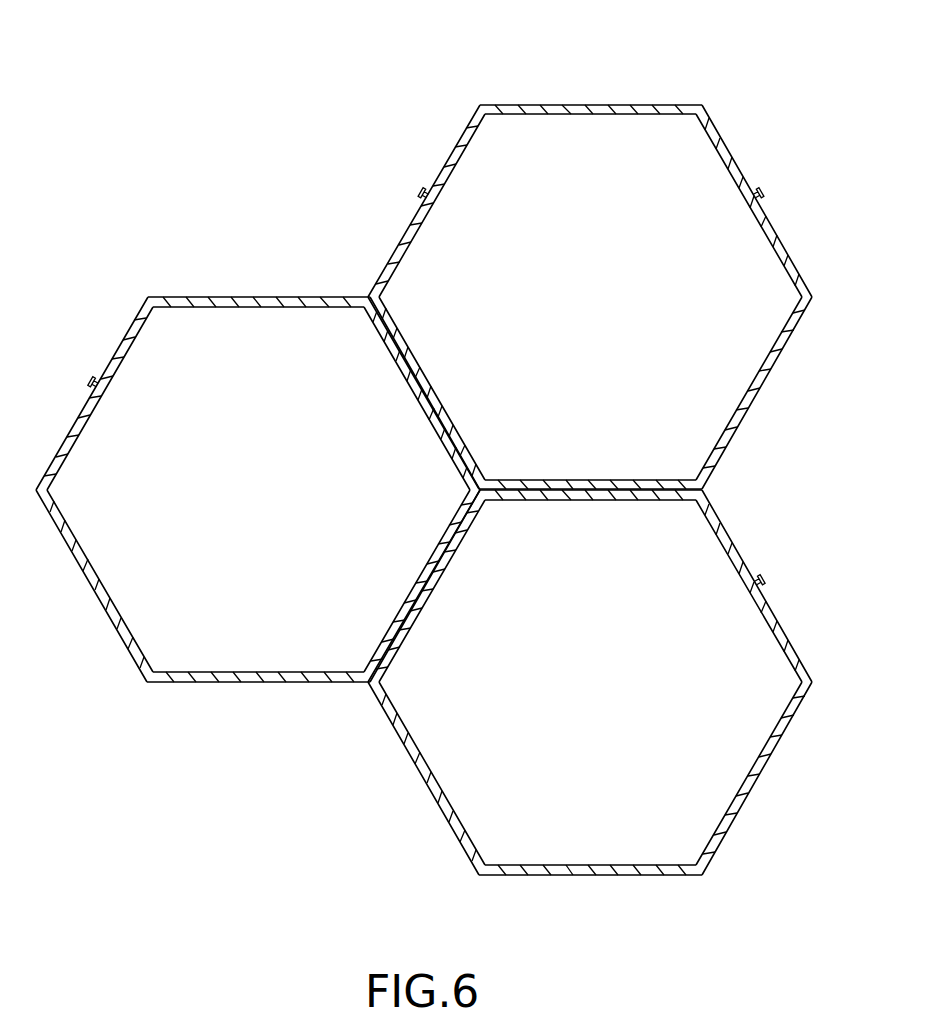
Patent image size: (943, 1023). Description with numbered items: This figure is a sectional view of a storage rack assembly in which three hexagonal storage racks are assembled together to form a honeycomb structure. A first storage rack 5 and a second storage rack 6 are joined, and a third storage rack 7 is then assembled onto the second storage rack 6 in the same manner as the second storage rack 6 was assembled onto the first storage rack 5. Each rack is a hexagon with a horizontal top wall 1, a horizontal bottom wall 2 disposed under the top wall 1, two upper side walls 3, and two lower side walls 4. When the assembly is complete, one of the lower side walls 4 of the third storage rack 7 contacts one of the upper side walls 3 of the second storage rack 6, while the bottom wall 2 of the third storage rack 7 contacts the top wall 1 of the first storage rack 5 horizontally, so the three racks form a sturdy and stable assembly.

The top wall 1 is at (648, 492).
The bottom wall 2 is at (642, 488).
The upper side wall 3 is at (398, 343).
The lower side wall 4 is at (398, 340).
The first storage rack 5 is at (594, 675).
The second storage rack 6 is at (258, 437).
The third storage rack 7 is at (590, 251).